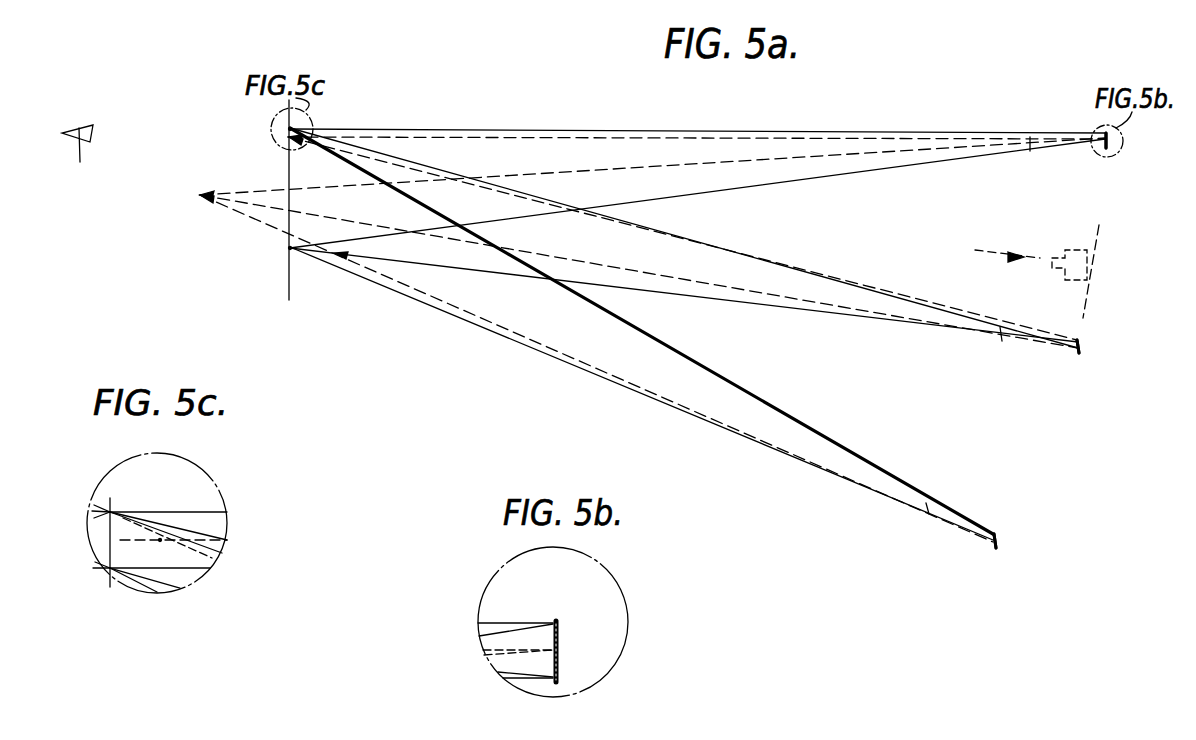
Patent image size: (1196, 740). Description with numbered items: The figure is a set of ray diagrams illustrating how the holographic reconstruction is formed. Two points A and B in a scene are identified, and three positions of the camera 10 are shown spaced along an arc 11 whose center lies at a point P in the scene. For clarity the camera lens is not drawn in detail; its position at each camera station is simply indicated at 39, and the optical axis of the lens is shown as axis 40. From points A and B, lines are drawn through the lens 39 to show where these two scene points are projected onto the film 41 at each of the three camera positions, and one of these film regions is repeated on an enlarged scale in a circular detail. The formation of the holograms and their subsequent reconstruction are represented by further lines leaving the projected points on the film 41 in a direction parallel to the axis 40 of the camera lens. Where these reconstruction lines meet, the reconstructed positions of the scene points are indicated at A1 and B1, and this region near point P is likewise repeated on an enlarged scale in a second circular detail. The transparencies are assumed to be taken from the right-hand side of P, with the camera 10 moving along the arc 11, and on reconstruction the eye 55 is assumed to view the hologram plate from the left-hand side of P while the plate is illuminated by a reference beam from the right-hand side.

In FIG. 5A, the eye 55 is at (79, 144).
In FIG. 5A, the reconstruction position of point A A1 is at (296, 118).
In FIG. 5C, the reconstruction position of point A A1 is at (113, 511).
In FIG. 5A, the reconstruction position of point B B1 is at (296, 146).
In FIG. 5C, the reconstruction position of point B B1 is at (159, 540).
In FIG. 5A, the point P is at (284, 138).
In FIG. 5C, the point P is at (108, 570).
In FIG. 5A, the point A is at (288, 249).
In FIG. 5A, the point B is at (199, 197).
In FIG. 5A, the camera lens 39 is at (1030, 148).
In FIG. 5A, the axis of the camera lens 40 is at (1072, 142).
In FIG. 5A, the film 41 is at (1107, 152).
In FIG. 5A, the camera 10 is at (1072, 282).
In FIG. 5A, the arc 11 is at (1098, 246).